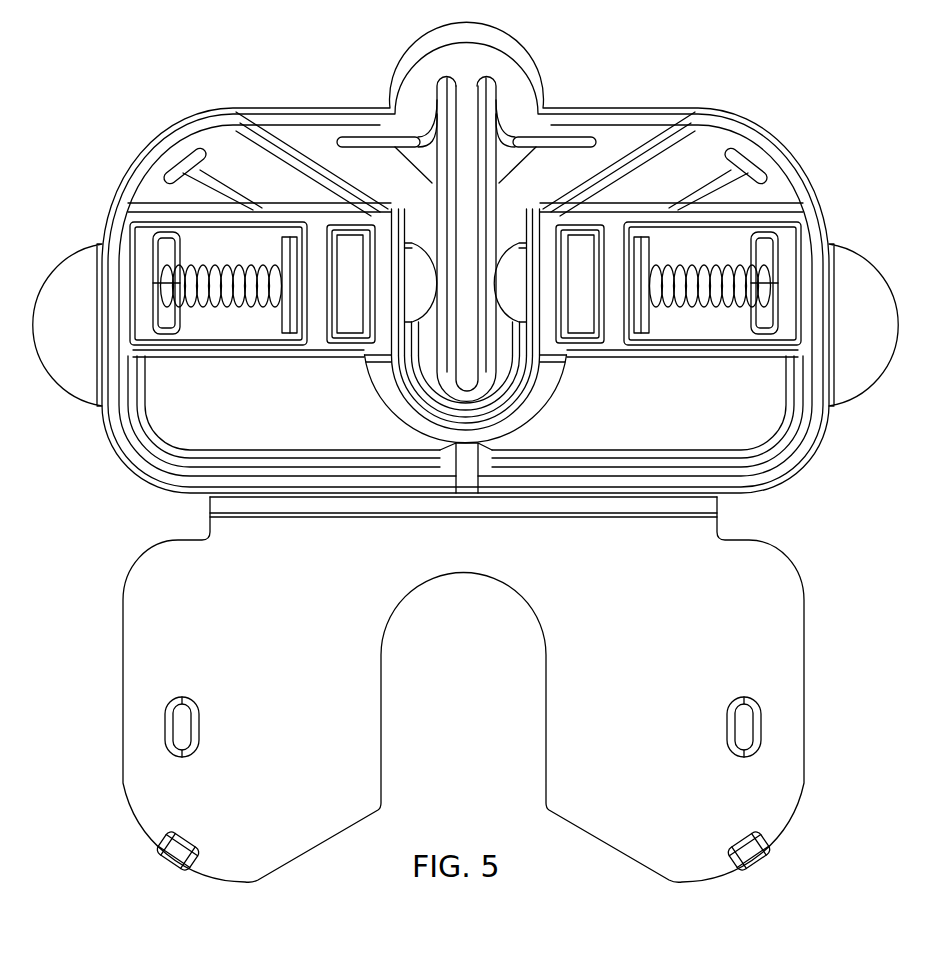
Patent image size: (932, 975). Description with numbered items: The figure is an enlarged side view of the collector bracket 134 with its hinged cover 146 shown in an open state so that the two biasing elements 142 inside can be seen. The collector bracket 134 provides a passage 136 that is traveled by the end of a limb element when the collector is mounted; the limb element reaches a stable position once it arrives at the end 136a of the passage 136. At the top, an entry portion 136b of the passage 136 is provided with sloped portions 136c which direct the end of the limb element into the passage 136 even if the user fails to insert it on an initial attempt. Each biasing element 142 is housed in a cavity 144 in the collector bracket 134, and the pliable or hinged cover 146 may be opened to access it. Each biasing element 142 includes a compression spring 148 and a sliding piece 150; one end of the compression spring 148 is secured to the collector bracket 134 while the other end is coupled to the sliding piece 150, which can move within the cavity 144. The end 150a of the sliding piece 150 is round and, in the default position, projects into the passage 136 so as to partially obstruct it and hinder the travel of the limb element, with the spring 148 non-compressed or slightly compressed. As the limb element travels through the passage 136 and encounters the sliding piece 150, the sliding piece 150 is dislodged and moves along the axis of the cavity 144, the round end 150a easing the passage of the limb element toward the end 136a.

The collector bracket 134 is at (835, 86).
The passage 136 is at (465, 233).
The end of the passage 136a is at (460, 395).
The entry portion of the passage 136b is at (498, 90).
The sloped portions 136c is at (297, 137).
The biasing element 142 is at (157, 232).
The cavity 144 is at (187, 260).
The hinged cover 146 is at (778, 562).
The compression spring 148 is at (226, 303).
The sliding piece 150 is at (290, 260).
The end of the sliding piece 150a is at (413, 300).